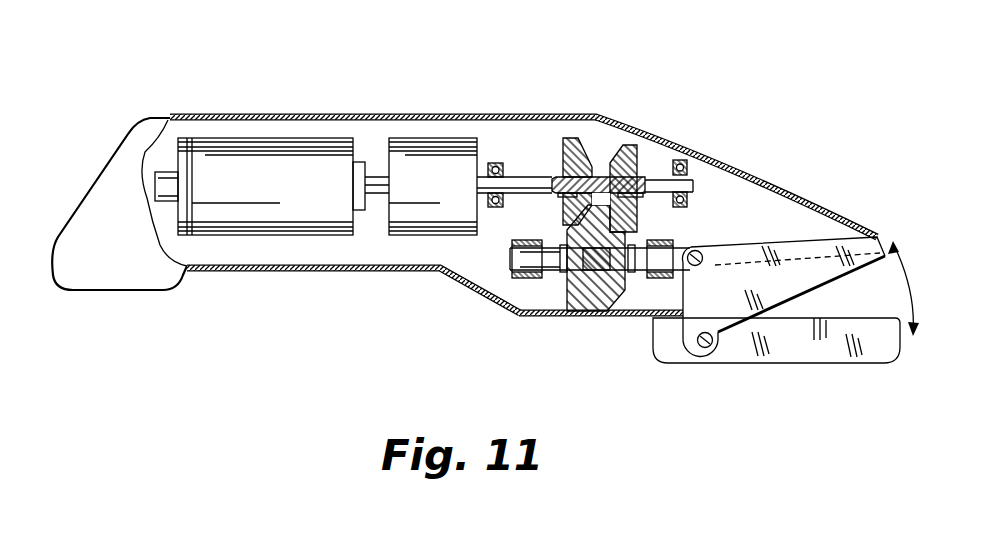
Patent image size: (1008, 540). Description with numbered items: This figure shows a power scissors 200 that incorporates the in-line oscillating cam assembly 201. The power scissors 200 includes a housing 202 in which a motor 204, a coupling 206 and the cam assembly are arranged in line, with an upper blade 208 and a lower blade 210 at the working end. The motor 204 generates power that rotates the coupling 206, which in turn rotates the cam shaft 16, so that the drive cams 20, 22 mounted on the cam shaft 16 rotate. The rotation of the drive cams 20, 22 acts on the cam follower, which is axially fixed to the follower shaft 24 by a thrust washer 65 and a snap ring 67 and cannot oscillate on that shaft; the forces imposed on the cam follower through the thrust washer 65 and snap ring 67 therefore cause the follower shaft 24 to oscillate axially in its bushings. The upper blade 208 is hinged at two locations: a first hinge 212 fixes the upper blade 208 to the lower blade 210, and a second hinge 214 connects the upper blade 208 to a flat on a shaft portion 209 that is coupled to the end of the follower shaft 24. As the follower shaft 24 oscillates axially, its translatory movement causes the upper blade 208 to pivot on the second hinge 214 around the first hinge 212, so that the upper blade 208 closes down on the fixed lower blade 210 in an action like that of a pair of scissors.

The power scissors 200 is at (397, 99).
The in-line oscillating cam assembly 201 is at (628, 115).
The housing 202 is at (548, 124).
The motor 204 is at (323, 150).
The coupling 206 is at (455, 150).
The drive cam 20 is at (577, 137).
The drive cam 22 is at (637, 147).
The cam shaft 16 is at (687, 173).
The second hinge 214 is at (700, 251).
The upper blade 208 is at (862, 243).
The follower shaft 24 is at (512, 258).
The snap ring 67 is at (557, 247).
The thrust washer 65 is at (567, 290).
The shaft portion 209 is at (630, 318).
The first hinge 212 is at (704, 352).
The lower blade 210 is at (812, 345).